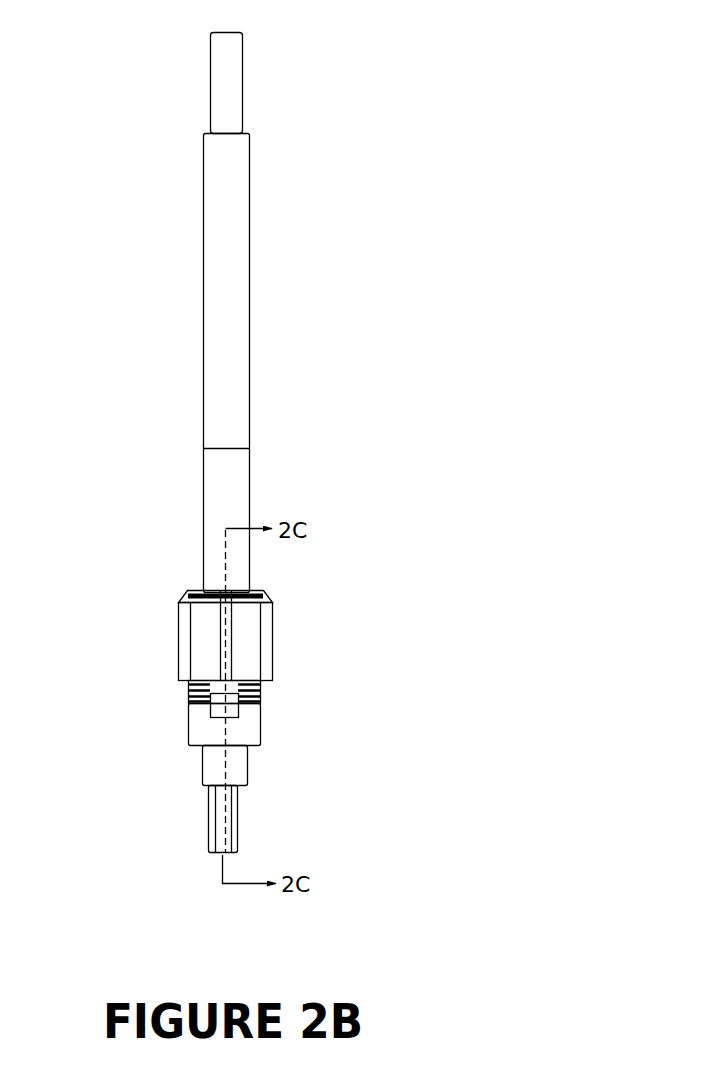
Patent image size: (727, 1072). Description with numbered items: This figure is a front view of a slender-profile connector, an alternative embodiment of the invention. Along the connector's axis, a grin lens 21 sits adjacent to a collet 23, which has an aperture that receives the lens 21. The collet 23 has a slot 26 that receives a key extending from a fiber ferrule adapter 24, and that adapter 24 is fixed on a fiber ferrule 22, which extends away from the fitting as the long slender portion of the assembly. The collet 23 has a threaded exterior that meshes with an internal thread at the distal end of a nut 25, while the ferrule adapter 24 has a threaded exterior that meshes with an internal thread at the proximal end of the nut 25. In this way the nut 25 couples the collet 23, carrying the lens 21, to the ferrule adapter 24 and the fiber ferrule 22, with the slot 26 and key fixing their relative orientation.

The grin lens 21 is at (240, 818).
The fiber ferrule 22 is at (238, 202).
The collet 23 is at (262, 733).
The fiber ferrule adapter 24 is at (189, 688).
The nut 25 is at (263, 643).
The slot 26 is at (218, 693).